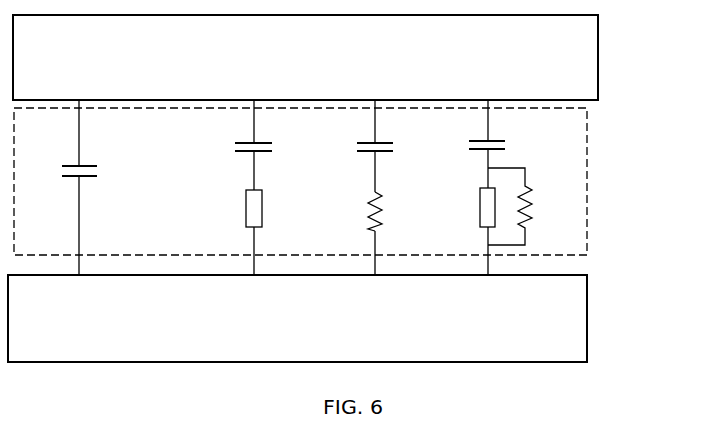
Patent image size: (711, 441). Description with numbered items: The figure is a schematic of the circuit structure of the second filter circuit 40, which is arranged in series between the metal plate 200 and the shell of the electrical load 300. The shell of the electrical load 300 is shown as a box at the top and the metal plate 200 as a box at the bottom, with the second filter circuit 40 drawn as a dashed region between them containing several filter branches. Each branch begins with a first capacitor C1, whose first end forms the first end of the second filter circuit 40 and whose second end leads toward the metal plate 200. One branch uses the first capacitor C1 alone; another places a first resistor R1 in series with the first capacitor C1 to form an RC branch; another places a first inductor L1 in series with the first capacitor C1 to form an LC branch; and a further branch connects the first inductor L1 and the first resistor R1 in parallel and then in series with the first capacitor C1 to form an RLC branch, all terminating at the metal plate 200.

The electrical load 300 is at (598, 58).
The metal plate 200 is at (587, 313).
The second filter circuit 40 is at (587, 176).
The first capacitor C1 is at (267, 161).
The first resistor R1 is at (353, 207).
The first inductor L1 is at (452, 206).